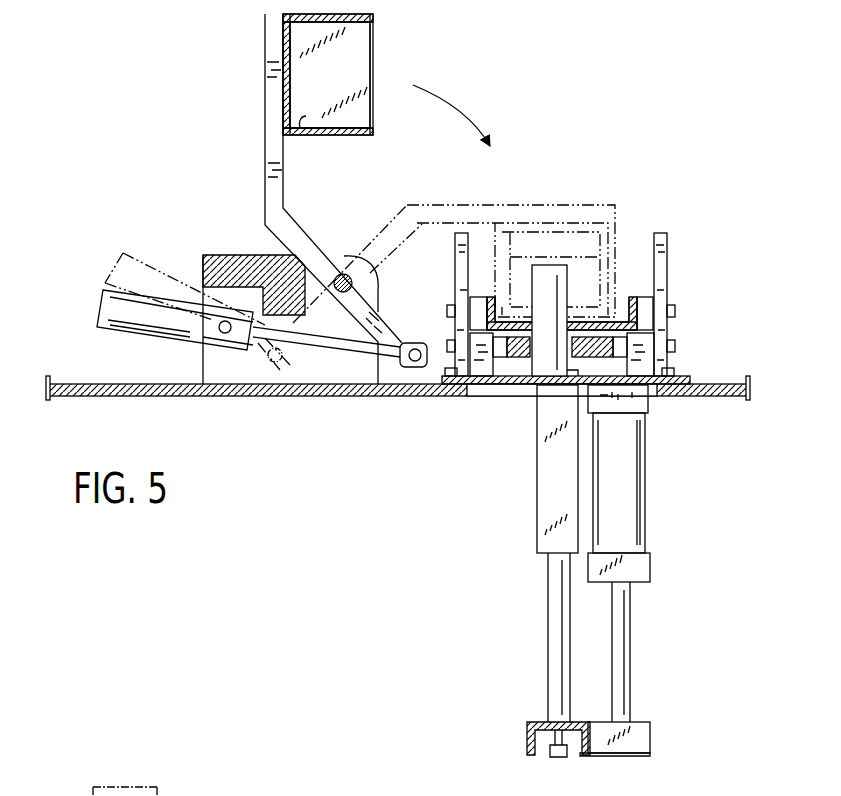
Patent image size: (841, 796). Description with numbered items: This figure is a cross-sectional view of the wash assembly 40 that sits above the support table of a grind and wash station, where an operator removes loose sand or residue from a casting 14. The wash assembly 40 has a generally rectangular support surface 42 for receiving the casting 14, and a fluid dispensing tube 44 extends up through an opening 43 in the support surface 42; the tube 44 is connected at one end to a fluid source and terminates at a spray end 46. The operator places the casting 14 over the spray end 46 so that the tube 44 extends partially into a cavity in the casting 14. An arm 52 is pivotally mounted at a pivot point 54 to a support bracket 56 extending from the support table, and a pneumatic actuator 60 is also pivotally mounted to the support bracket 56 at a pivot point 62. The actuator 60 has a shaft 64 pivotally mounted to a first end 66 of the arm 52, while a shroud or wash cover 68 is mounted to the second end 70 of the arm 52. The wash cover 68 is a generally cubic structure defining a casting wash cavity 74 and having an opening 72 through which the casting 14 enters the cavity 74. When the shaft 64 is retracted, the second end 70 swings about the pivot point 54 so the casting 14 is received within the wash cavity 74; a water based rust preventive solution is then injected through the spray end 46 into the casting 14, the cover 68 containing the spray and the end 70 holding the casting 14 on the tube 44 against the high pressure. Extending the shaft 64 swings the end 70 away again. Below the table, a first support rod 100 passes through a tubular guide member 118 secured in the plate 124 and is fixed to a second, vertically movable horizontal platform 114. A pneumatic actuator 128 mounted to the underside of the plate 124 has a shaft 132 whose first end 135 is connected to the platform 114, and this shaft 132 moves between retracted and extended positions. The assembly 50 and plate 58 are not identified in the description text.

The casting 14 is at (573, 253).
The wash assembly 40 is at (496, 96).
The support surface 42 is at (624, 316).
The opening 43 is at (567, 317).
The fluid dispensing tube 44 is at (532, 271).
The spray end 46 is at (549, 261).
The actuator assembly 50 is at (243, 231).
The arm 52 is at (268, 107).
The pivot point 54 is at (338, 273).
The support bracket 56 is at (228, 255).
The base plate 58 is at (134, 397).
The pneumatic actuator 60 is at (137, 258).
The pivot point 62 is at (218, 325).
The shaft 64 is at (337, 345).
The first end 66 is at (410, 345).
The wash cover 68 is at (372, 11).
The second end 70 is at (275, 33).
The opening 72 is at (382, 43).
The casting wash cavity 74 is at (300, 118).
The first support rod 100 is at (556, 610).
The second horizontal platform 114 is at (622, 750).
The guide member 118 is at (545, 483).
The plate 124 is at (480, 385).
The pneumatic actuator 128 is at (625, 500).
The shaft 132 is at (620, 622).
The first end 135 is at (620, 722).